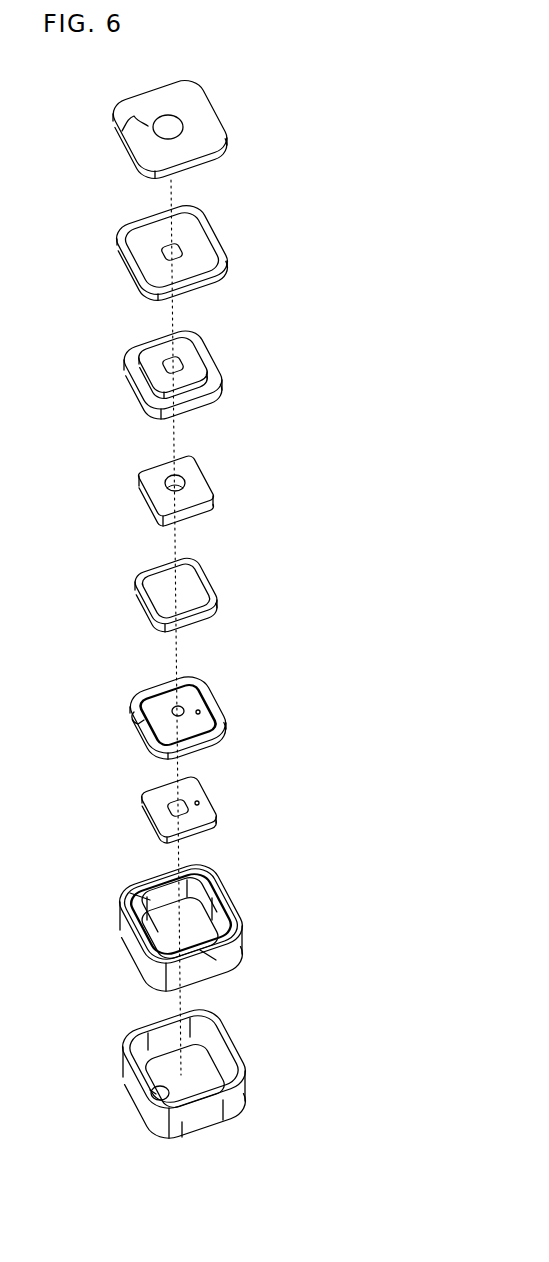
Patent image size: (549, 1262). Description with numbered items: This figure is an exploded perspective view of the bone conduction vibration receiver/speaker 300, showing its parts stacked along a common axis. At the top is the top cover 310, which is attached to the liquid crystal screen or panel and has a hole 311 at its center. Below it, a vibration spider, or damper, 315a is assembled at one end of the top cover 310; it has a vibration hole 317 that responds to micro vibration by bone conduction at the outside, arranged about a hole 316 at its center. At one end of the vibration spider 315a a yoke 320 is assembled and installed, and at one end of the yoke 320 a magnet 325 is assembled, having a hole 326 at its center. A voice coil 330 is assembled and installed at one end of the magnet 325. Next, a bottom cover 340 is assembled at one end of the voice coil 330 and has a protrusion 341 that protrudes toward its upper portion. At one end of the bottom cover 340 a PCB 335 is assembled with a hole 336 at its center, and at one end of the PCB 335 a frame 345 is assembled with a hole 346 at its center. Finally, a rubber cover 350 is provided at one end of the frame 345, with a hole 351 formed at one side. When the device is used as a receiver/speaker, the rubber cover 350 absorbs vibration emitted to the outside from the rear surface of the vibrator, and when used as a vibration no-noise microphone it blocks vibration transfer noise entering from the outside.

The bone conduction vibration receiver/speaker 300 is at (405, 402).
The top cover 310 is at (219, 136).
The hole 311 is at (118, 131).
The vibration spider (damper) 315a is at (210, 208).
The hole 316 is at (133, 221).
The vibration hole 317 is at (163, 260).
The yoke 320 is at (218, 382).
The magnet 325 is at (208, 486).
The hole 326 is at (166, 478).
The voice coil 330 is at (218, 600).
The PCB 335 is at (203, 784).
The hole 336 is at (168, 807).
The bottom cover 340 is at (220, 702).
The protrusion 341 is at (134, 713).
The frame 345 is at (130, 893).
The hole 346 is at (210, 960).
The rubber cover 350 is at (246, 1058).
The hole 351 is at (148, 1090).